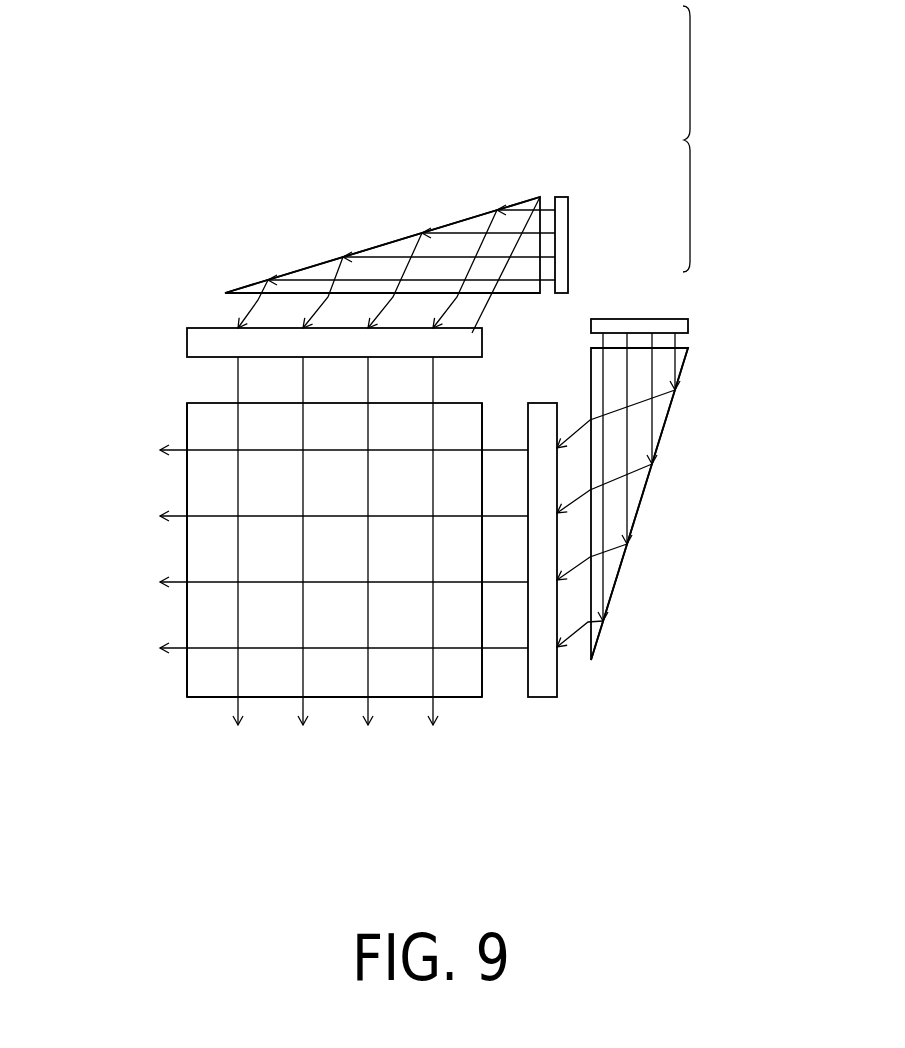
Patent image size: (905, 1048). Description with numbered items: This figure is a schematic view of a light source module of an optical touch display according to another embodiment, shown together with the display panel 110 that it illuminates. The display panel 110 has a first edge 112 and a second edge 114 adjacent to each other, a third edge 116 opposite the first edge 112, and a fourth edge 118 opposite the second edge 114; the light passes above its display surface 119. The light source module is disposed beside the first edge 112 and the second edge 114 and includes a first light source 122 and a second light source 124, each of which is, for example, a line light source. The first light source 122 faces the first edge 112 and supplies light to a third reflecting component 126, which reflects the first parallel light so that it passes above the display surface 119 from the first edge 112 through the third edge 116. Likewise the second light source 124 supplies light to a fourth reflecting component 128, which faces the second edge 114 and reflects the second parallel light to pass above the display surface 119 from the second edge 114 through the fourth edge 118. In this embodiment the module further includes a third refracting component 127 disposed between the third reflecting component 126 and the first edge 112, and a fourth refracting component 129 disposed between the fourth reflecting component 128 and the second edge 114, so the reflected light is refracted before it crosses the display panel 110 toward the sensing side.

The display panel 110 is at (473, 697).
The first edge 112 is at (203, 402).
The second edge 114 is at (482, 672).
The third edge 116 is at (207, 698).
The fourth edge 118 is at (187, 417).
The display surface 119 is at (446, 684).
The first light source 122 is at (564, 198).
The second light source 124 is at (602, 327).
The third reflecting component 126 is at (540, 197).
The third refracting component 127 is at (504, 206).
The fourth reflecting component 128 is at (615, 353).
The fourth refracting component 129 is at (552, 417).